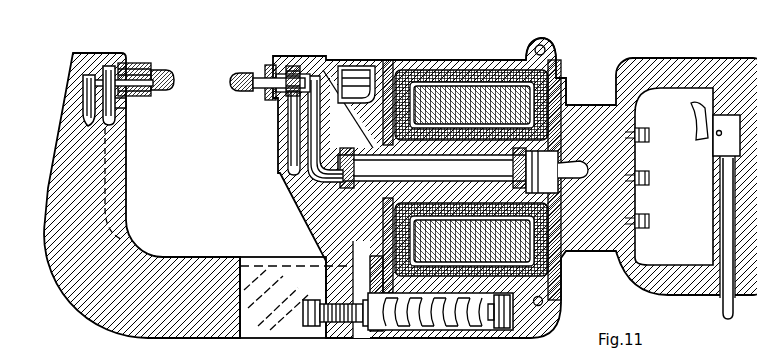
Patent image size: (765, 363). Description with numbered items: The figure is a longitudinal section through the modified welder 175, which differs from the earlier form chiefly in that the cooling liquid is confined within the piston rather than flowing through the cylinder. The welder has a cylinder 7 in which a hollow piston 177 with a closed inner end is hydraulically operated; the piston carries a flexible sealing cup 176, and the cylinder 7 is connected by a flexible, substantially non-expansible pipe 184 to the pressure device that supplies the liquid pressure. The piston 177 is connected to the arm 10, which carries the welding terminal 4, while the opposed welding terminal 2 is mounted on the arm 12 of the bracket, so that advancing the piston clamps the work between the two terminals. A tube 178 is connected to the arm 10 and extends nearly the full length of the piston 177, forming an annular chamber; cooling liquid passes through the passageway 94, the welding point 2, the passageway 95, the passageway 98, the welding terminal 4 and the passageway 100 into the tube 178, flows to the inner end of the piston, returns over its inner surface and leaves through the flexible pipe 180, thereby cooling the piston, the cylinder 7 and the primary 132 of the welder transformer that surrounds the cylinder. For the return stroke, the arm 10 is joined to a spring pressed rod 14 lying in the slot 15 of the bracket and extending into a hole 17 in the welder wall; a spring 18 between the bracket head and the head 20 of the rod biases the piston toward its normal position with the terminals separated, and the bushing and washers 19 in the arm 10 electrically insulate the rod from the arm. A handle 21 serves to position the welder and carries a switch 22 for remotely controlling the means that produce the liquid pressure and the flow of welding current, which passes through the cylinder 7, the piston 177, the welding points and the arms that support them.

The welding terminal 2 is at (150, 66).
The welding terminal 4 is at (230, 68).
The cylinder 7 is at (545, 67).
The arm 10 is at (295, 50).
The arm 12 is at (72, 160).
The spring pressed rod 14 is at (365, 323).
The slot 15 is at (280, 313).
The hole 17 is at (495, 320).
The spring 18 is at (412, 330).
The bushing and washers 19 is at (327, 320).
The head 20 is at (487, 317).
The handle 21 is at (708, 207).
The switch 22 is at (708, 130).
The passageway 94 is at (118, 97).
The passageway 95 is at (75, 93).
The passageway 98 is at (288, 113).
The passageway 100 is at (312, 70).
The primary 132 is at (473, 72).
The welder 175 is at (445, 50).
The flexible sealing cup 176 is at (577, 100).
The piston 177 is at (558, 78).
The tube 178 is at (340, 185).
The flexible pipe 180 is at (300, 178).
The flexible pipe 184 is at (577, 243).